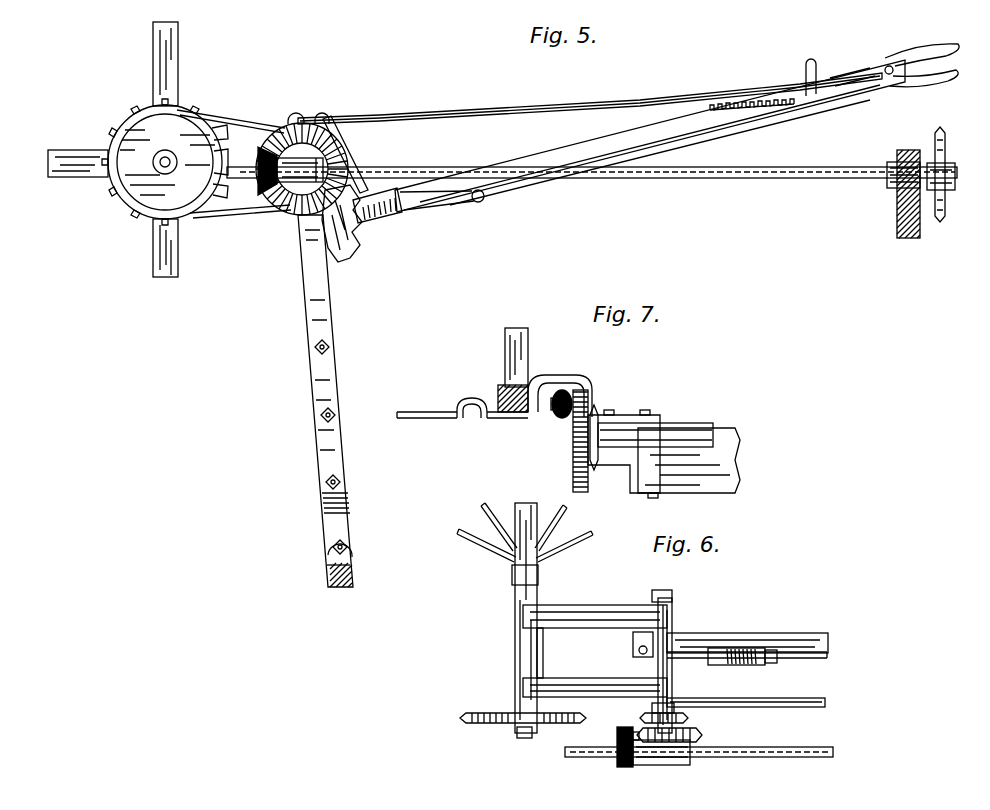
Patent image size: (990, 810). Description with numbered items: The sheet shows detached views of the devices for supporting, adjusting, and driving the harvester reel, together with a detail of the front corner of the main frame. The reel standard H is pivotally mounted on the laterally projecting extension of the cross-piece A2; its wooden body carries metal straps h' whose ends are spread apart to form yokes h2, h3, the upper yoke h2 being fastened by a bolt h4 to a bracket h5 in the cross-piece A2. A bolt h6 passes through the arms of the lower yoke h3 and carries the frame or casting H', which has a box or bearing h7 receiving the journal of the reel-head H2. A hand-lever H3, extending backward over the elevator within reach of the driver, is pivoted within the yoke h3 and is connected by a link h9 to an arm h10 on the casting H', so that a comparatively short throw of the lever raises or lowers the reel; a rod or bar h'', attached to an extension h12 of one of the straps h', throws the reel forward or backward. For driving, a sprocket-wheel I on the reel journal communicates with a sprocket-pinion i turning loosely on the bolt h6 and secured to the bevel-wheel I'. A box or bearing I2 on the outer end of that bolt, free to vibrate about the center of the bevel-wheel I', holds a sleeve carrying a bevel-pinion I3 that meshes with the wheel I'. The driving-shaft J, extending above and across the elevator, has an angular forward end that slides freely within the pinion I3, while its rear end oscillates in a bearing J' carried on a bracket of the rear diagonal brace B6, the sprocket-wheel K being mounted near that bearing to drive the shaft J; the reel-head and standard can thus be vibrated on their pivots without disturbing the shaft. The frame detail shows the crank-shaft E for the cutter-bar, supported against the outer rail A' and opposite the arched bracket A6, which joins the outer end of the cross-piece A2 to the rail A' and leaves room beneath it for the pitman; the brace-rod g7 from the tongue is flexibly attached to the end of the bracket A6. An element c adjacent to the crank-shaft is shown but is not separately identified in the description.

In FIG. 5, the sprocket-wheel I is at (165, 162).
In FIG. 6, the sprocket-wheel I is at (523, 731).
In FIG. 5, the driving-gear or bevel-wheel I' is at (301, 159).
In FIG. 6, the driving-gear or bevel-wheel I' is at (680, 731).
In FIG. 5, the box or bearing I2 is at (292, 184).
In FIG. 6, the box or bearing I2 is at (660, 762).
In FIG. 5, the bevel-pinion I3 is at (260, 180).
In FIG. 6, the bevel-pinion I3 is at (618, 762).
In FIG. 5, the driving-shaft J is at (592, 184).
In FIG. 6, the driving-shaft J is at (699, 742).
In FIG. 5, the bearing J' is at (886, 187).
In FIG. 5, the sprocket-wheel K is at (948, 200).
In FIG. 5, the diagonal braces B6 is at (905, 215).
In FIG. 7, the diagonal braces B6 is at (528, 350).
In FIG. 5, the reel standard H is at (330, 401).
In FIG. 6, the frame or casting H' is at (591, 620).
In FIG. 6, the reel-head H2 is at (512, 568).
In FIG. 5, the hand-lever H3 is at (723, 115).
In FIG. 6, the hand-lever H3 is at (765, 640).
In FIG. 5, the metal side pieces or straps h' is at (321, 361).
In FIG. 5, the yoke h2 is at (335, 471).
In FIG. 5, the yoke h3 is at (392, 223).
In FIG. 5, the bolt h4 is at (349, 547).
In FIG. 5, the bracket h5 is at (343, 558).
In FIG. 6, the bolt h6 is at (659, 592).
In FIG. 6, the box or bearing h7 is at (537, 648).
In FIG. 5, the link h9 is at (338, 130).
In FIG. 6, the link h9 is at (690, 648).
In FIG. 5, the arm h10 is at (322, 113).
In FIG. 6, the arm h10 is at (655, 649).
In FIG. 5, the rod or bar h'' is at (590, 99).
In FIG. 6, the rod or bar h'' is at (746, 694).
In FIG. 5, the extension h12 is at (297, 112).
In FIG. 6, the extension h12 is at (652, 707).
In FIG. 6, the sprocket-pinion i is at (688, 719).
In FIG. 7, the outer longitudinal rail A' is at (643, 444).
In FIG. 7, the cross-piece A2 is at (498, 391).
In FIG. 7, the arched bracket A6 is at (580, 382).
In FIG. 7, the collar c is at (551, 410).
In FIG. 7, the brace-rod g7 is at (433, 418).
In FIG. 7, the crank-shaft E is at (690, 452).